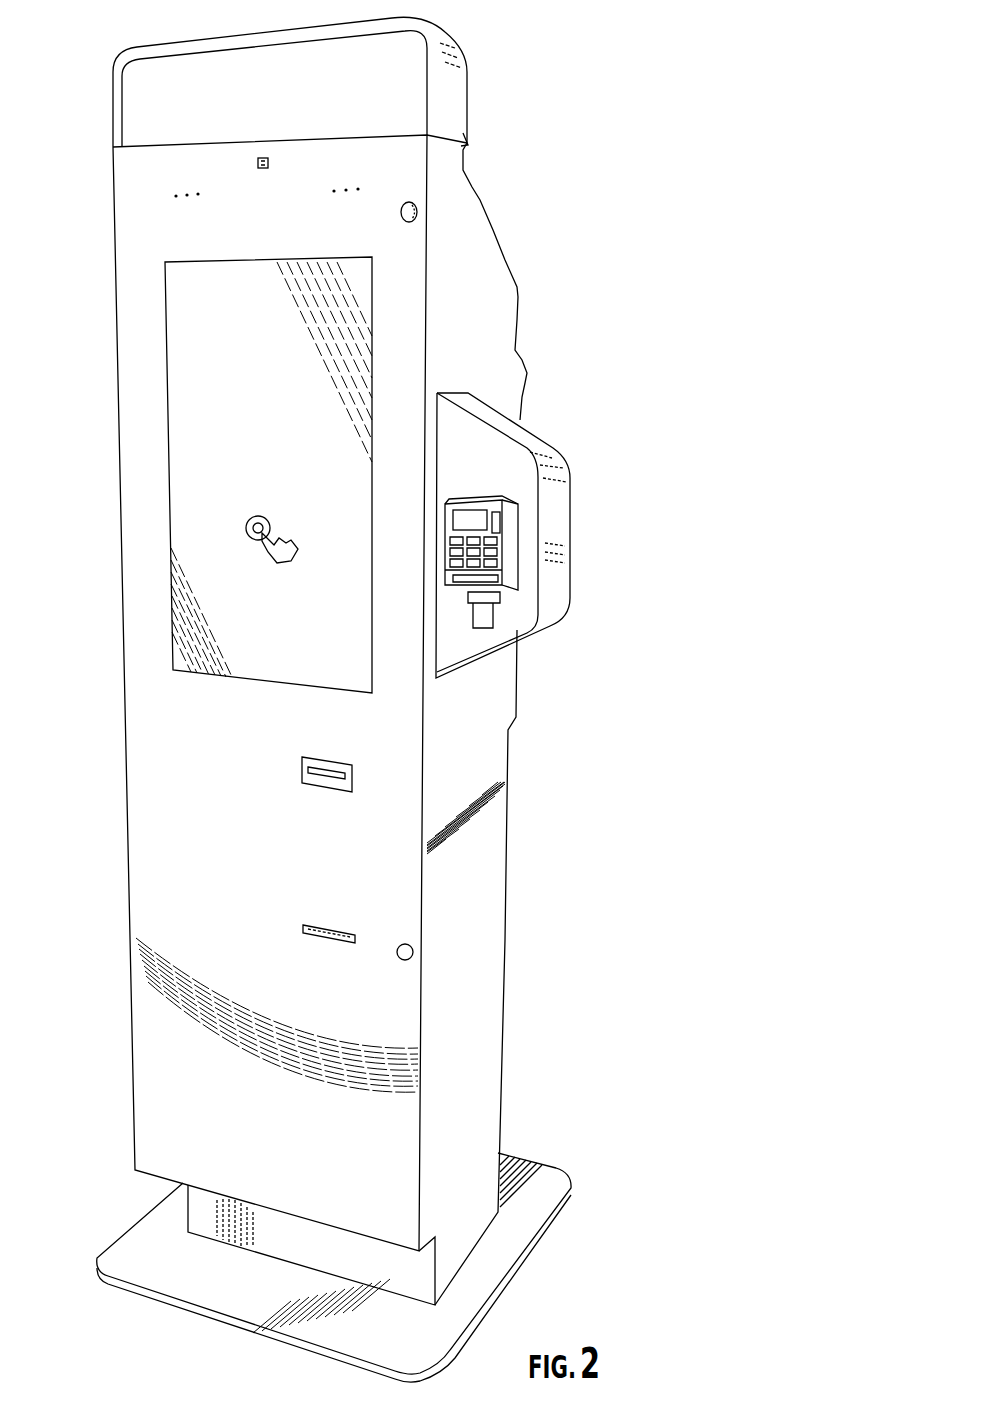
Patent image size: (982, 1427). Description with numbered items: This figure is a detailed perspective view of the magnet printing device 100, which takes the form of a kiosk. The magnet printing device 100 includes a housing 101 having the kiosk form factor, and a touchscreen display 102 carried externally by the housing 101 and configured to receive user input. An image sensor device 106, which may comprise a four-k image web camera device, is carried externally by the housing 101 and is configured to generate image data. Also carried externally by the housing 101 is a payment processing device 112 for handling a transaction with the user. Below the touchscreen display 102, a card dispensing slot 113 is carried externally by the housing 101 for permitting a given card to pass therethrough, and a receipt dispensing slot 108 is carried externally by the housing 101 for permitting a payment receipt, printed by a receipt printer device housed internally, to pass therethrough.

The magnet printing device 100 is at (632, 103).
The housing 101 is at (133, 323).
The touchscreen display 102 is at (183, 365).
The image sensor device 106 is at (256, 163).
The receipt dispensing slot 108 is at (325, 937).
The payment processing device 112 is at (510, 521).
The card dispensing slot 113 is at (316, 778).